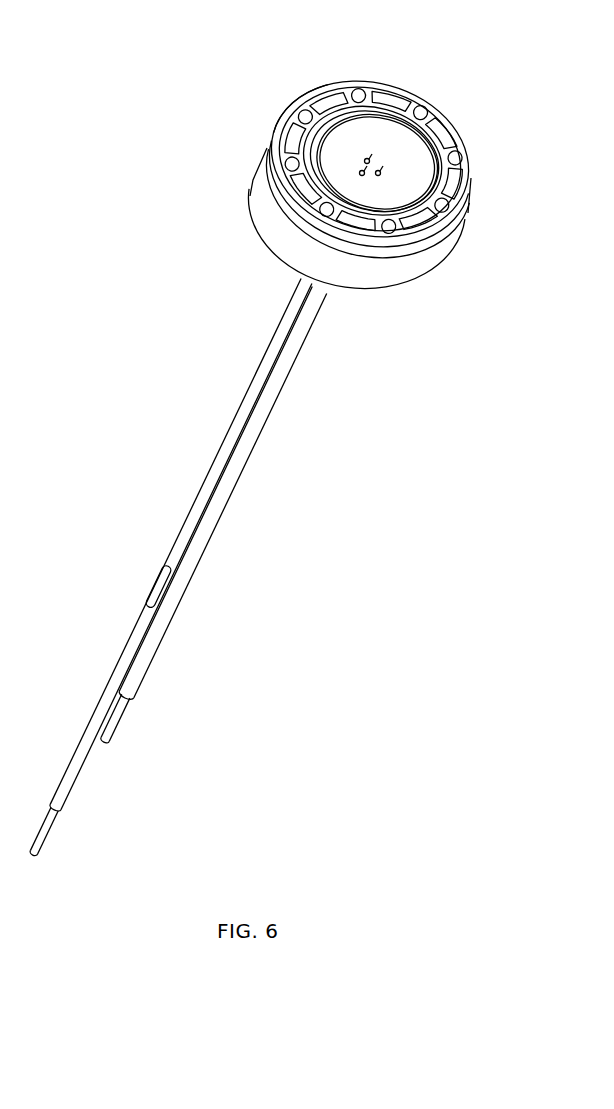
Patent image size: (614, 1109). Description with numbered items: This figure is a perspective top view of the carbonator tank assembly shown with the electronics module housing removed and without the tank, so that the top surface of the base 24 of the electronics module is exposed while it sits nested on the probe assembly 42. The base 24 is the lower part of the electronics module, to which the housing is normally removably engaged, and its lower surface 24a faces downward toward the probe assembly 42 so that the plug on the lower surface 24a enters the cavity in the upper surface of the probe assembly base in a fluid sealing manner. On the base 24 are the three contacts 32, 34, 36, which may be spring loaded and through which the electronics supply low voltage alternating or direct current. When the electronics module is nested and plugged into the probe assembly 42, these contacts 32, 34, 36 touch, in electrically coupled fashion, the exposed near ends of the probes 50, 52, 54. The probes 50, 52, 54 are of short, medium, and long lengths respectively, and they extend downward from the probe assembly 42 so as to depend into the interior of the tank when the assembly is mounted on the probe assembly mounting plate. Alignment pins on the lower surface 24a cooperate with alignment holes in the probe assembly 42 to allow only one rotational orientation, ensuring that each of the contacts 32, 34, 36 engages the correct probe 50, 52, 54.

The base 24 is at (268, 132).
The lower surface 24a is at (290, 103).
The contact 32 is at (387, 170).
The contact 34 is at (373, 157).
The contact 36 is at (358, 173).
The probe assembly 42 is at (425, 262).
The probe 50 is at (305, 401).
The probe 52 is at (305, 401).
The probe 54 is at (305, 401).